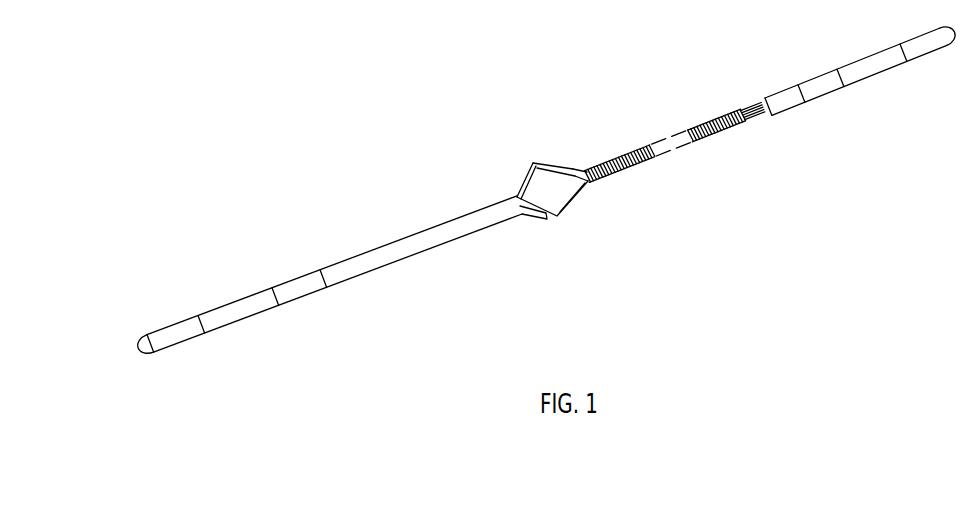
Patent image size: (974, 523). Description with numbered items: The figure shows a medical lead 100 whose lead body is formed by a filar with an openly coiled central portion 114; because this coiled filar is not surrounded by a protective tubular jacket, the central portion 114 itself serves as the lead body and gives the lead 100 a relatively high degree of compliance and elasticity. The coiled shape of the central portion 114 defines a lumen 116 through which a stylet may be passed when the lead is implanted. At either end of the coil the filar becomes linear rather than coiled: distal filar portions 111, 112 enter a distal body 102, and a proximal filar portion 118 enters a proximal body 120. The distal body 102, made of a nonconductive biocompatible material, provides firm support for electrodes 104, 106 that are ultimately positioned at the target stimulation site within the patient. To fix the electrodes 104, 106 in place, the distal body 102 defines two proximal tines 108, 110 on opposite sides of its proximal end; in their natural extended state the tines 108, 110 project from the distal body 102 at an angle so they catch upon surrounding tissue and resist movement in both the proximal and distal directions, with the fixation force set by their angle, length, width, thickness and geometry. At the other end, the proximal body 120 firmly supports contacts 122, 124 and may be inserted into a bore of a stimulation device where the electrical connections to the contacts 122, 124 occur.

The medical lead 100 is at (488, 111).
The distal body 102 is at (369, 250).
The electrode 104 is at (189, 339).
The electrode 106 is at (305, 294).
The proximal tine 108 is at (529, 172).
The proximal tine 110 is at (536, 217).
The distal filar portion 111 is at (549, 166).
The distal filar portion 112 is at (569, 208).
The central portion 114 is at (625, 170).
The lumen 116 is at (574, 167).
The proximal filar portion 118 is at (760, 116).
The proximal body 120 is at (773, 93).
The contact 122 is at (831, 92).
The contact 124 is at (922, 56).